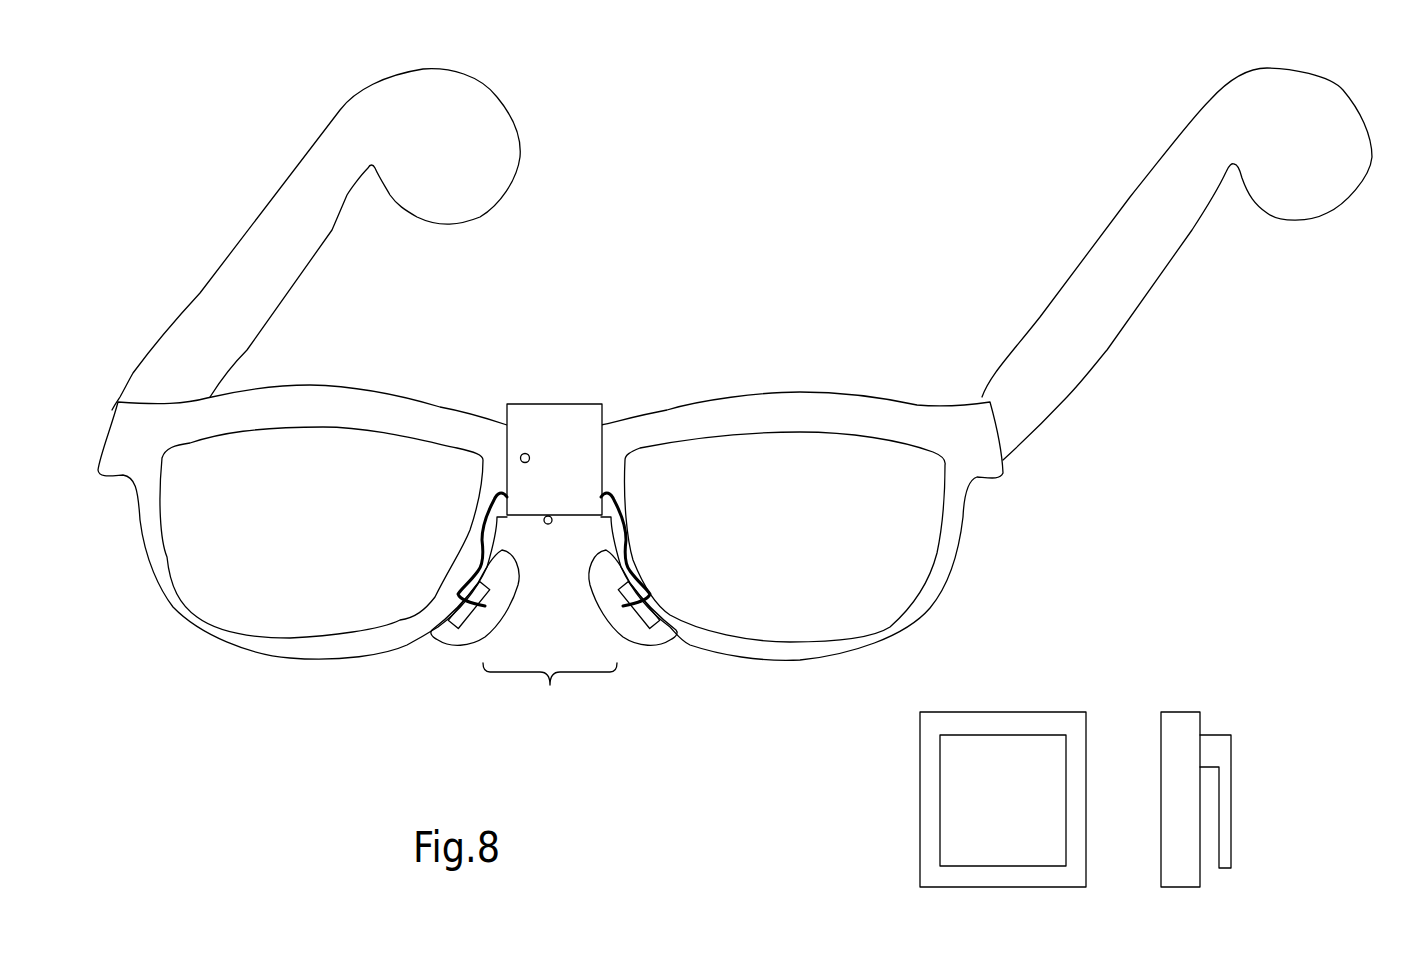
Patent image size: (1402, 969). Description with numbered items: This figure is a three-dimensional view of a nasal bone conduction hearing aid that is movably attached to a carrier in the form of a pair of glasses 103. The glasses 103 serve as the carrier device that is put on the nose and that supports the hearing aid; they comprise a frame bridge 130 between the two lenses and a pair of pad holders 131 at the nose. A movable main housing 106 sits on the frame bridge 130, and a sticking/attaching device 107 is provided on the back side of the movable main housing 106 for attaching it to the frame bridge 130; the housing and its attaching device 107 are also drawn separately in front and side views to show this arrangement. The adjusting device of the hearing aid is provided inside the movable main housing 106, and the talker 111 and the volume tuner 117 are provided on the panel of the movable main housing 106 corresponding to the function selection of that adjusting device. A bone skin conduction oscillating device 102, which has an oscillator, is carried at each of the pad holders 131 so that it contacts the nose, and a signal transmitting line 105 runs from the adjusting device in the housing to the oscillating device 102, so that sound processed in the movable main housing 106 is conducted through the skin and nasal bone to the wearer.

The bone skin conduction oscillating device 102 is at (470, 633).
The pair of glasses 103 is at (1128, 310).
The signal transmitting line 105 is at (668, 627).
The movable main housing 106 is at (556, 418).
The sticking/attaching device 107 is at (1215, 743).
The talker 111 is at (521, 454).
The volume tuner 117 is at (547, 528).
The frame bridge 130 is at (614, 440).
The pair of pad holders 131 is at (550, 693).